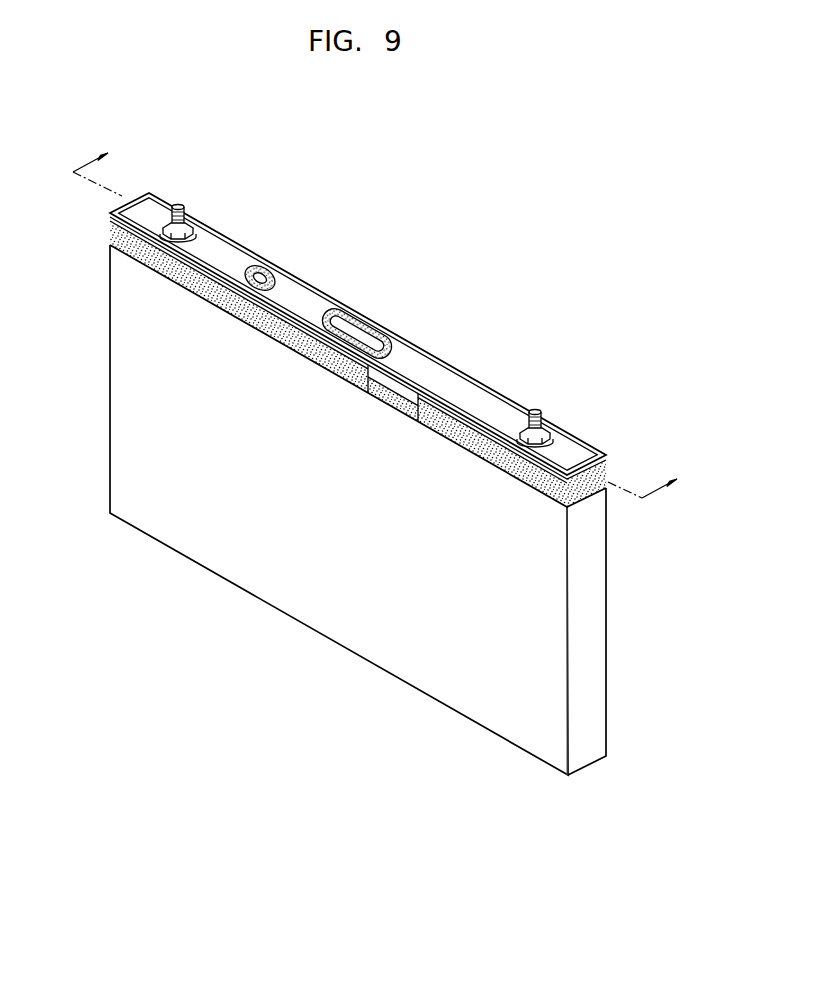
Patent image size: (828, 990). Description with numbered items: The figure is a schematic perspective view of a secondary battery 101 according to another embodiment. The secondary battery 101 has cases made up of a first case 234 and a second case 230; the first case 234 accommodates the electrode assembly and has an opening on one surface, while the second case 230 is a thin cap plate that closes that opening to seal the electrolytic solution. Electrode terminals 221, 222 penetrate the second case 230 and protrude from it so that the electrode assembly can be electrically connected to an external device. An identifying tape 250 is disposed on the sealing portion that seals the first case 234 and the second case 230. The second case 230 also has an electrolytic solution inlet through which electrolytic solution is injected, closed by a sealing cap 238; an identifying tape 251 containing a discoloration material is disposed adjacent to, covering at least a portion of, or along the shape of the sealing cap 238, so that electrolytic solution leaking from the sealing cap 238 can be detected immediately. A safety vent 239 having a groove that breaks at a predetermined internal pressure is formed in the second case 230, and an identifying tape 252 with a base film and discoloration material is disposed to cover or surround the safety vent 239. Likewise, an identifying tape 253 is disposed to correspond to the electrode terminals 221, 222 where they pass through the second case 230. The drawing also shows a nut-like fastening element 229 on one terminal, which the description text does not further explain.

The secondary battery 101 is at (550, 184).
The electrode terminal 221 is at (178, 207).
The electrode terminal 222 is at (536, 412).
The nut 229 is at (567, 418).
The second case 230 is at (303, 303).
The first case 234 is at (520, 717).
The sealing cap 238 is at (262, 275).
The safety vent 239 is at (364, 332).
The identifying tape 250 is at (587, 490).
The identifying tape 251 is at (247, 249).
The identifying tape 252 is at (392, 348).
The identifying tape 253 is at (577, 433).